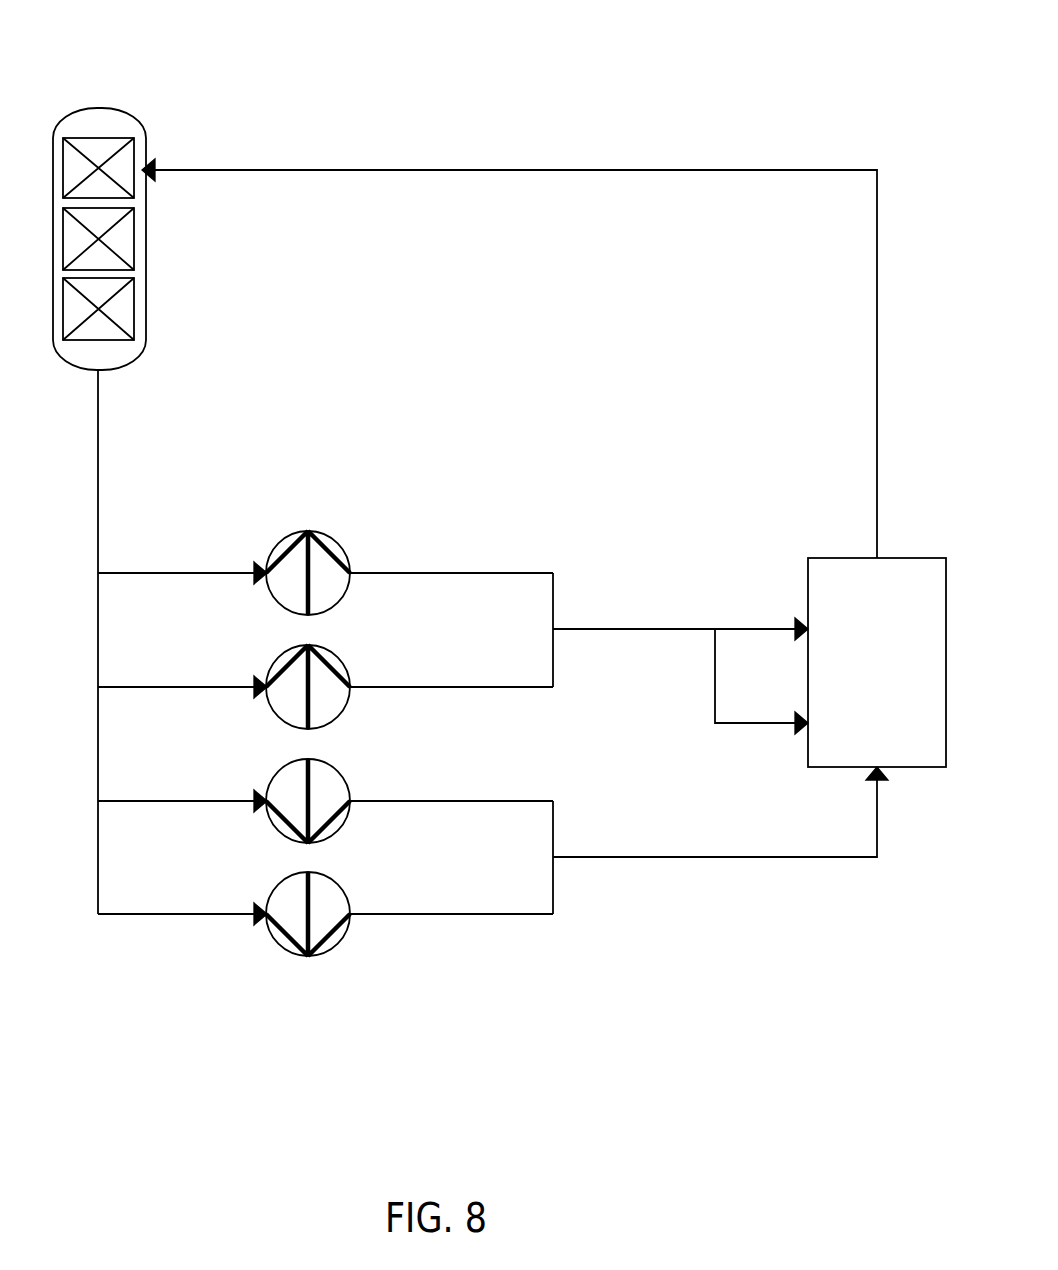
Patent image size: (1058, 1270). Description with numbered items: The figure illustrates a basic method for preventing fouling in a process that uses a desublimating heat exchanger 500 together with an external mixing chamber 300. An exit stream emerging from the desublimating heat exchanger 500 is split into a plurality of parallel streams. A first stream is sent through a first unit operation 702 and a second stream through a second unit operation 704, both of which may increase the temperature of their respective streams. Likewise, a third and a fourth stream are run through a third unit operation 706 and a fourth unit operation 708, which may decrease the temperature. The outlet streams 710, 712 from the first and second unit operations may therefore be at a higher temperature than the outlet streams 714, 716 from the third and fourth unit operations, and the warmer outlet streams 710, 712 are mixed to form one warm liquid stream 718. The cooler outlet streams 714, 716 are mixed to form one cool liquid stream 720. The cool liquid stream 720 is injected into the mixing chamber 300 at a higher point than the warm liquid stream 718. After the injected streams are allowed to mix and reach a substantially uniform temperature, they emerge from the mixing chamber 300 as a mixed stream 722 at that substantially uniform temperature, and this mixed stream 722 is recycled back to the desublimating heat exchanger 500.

The desublimating heat exchanger 500 is at (101, 108).
The first unit operation 702 is at (308, 531).
The second unit operation 704 is at (275, 658).
The third unit operation 706 is at (275, 771).
The fourth unit operation 708 is at (275, 884).
The outlet stream from the first unit operation 710 is at (451, 551).
The outlet stream from the second unit operation 712 is at (451, 664).
The outlet stream from the third unit operation 714 is at (451, 778).
The outlet stream from the fourth unit operation 716 is at (451, 891).
The warm liquid stream 718 is at (680, 653).
The cool liquid stream 720 is at (720, 840).
The mixed stream 722 is at (485, 162).
The mixing chamber 300 is at (903, 689).